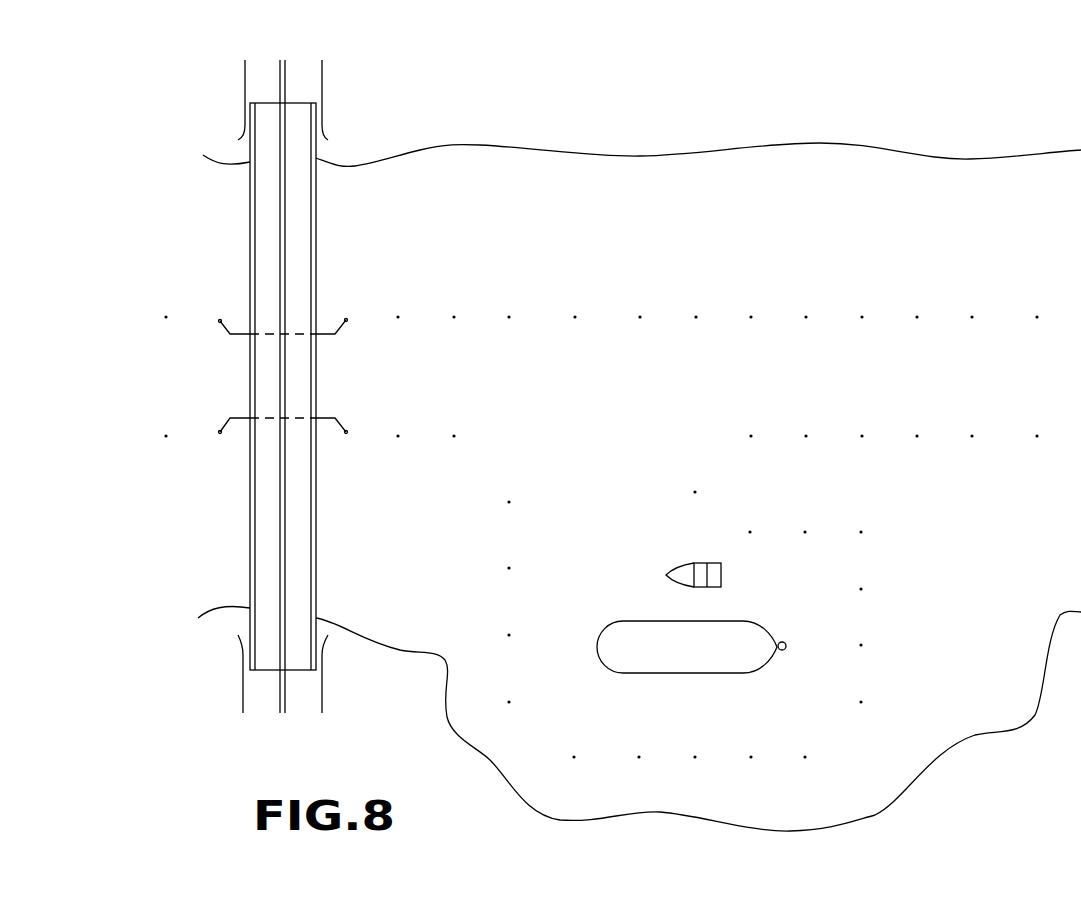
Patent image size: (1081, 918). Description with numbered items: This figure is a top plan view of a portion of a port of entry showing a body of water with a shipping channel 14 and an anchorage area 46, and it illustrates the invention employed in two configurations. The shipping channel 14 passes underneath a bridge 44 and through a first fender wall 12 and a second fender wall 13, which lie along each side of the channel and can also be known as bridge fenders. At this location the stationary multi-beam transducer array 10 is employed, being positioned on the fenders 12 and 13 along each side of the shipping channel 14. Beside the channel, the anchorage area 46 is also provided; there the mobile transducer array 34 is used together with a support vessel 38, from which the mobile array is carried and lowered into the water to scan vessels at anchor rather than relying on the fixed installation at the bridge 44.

The stationary multi-beam transducer array 10 is at (340, 292).
The first fender wall 12 is at (244, 332).
The second fender wall 13 is at (244, 421).
The shipping channel 14 is at (445, 390).
The bridge 44 is at (250, 517).
The support vessel 38 is at (686, 564).
The mobile transducer array 34 is at (730, 573).
The anchorage area 46 is at (694, 723).